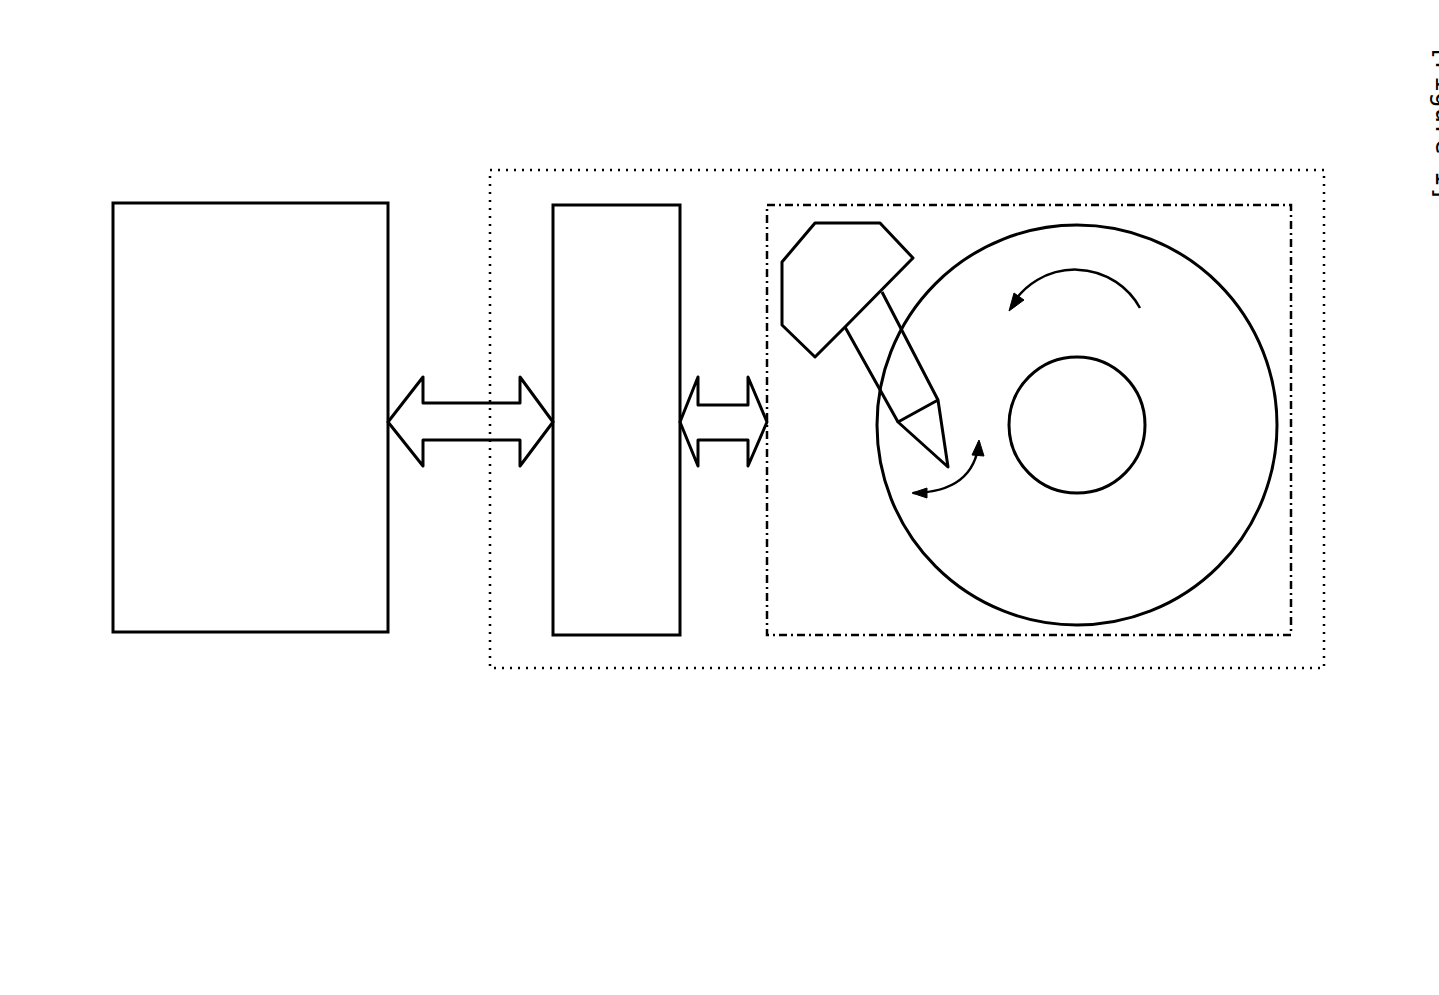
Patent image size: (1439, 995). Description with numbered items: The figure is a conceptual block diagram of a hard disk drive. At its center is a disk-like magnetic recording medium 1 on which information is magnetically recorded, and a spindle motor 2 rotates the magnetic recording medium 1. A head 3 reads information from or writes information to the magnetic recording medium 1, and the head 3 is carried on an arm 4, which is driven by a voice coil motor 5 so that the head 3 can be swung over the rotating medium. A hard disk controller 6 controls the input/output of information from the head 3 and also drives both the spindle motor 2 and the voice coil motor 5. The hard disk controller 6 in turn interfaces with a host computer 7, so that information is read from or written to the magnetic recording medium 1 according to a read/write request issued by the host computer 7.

The magnetic recording medium 1 is at (1085, 572).
The spindle motor 2 is at (1113, 430).
The head 3 is at (927, 440).
The arm 4 is at (910, 377).
The voice coil motor 5 is at (832, 242).
The hard disk controller 6 is at (577, 217).
The host computer 7 is at (227, 220).